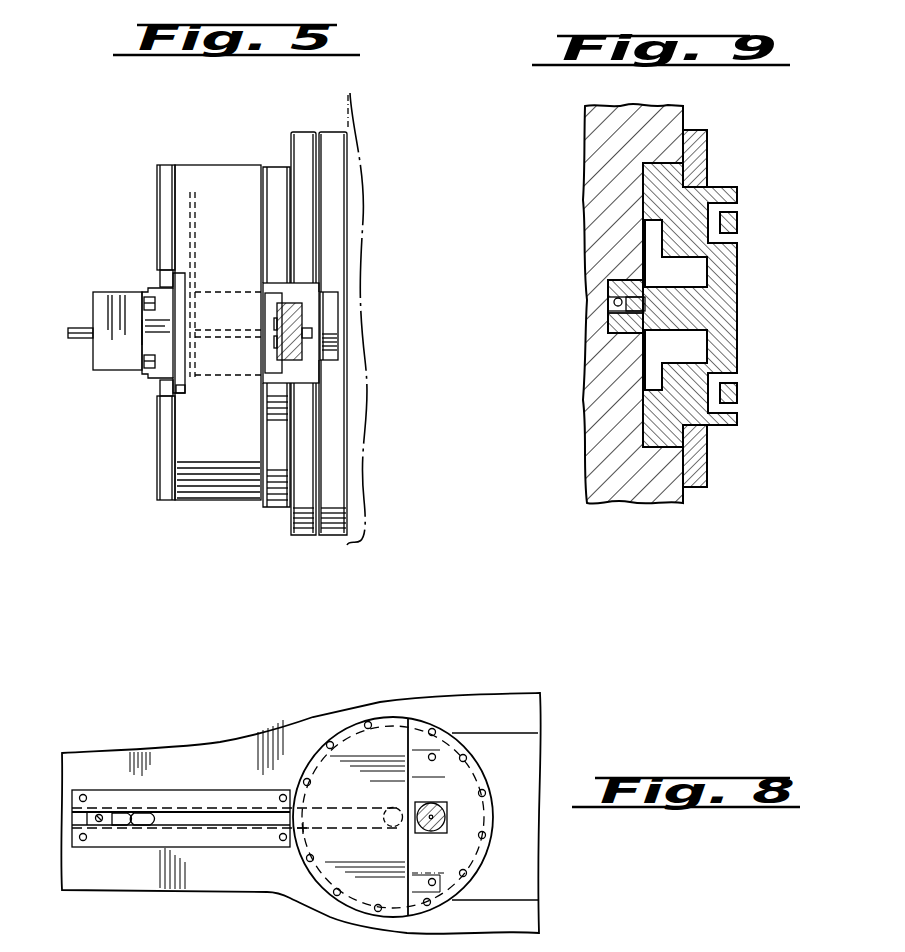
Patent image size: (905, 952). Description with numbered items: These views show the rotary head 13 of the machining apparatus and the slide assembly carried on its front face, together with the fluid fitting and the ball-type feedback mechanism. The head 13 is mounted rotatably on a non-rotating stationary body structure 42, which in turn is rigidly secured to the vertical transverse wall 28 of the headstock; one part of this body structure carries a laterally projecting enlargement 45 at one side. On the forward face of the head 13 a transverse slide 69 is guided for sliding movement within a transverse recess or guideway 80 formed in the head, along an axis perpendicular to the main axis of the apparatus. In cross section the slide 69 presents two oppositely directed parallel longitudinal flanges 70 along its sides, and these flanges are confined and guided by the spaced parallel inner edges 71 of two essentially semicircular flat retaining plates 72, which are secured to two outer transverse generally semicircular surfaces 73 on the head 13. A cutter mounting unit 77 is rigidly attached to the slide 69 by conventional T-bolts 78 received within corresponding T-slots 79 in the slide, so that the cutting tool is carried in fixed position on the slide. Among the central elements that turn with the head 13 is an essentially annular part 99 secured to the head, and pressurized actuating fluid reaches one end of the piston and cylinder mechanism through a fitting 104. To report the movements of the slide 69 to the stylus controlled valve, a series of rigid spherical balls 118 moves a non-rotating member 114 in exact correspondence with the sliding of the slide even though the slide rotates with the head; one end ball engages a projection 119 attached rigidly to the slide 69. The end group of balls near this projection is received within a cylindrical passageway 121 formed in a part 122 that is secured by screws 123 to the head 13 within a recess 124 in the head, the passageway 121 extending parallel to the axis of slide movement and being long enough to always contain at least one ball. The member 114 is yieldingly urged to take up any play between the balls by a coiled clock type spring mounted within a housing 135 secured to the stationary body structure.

In FIG. 5, the head 13 is at (232, 142).
In FIG. 5, the vertical transverse wall 28 is at (347, 545).
In FIG. 5, the non-rotating stationary body structure 42 is at (305, 128).
In FIG. 5, the laterally projecting enlargement 45 is at (305, 262).
In FIG. 5, the transverse slide 69 is at (140, 342).
In FIG. 9, the transverse slide 69 is at (767, 322).
In FIG. 5, the longitudinal flanges 70 is at (162, 278).
In FIG. 5, the inner edges 71 is at (148, 297).
In FIG. 5, the retaining plates 72 is at (158, 200).
In FIG. 5, the outer transverse semicircular surfaces 73 is at (168, 500).
In FIG. 5, the cutter mounting unit 77 is at (93, 300).
In FIG. 5, the T-bolts 78 is at (142, 288).
In FIG. 5, the T-slots 79 is at (148, 343).
In FIG. 5, the transverse recess or guideway 80 is at (178, 392).
In FIG. 8, the annular part 99 is at (432, 722).
In FIG. 8, the fitting 104 is at (447, 825).
In FIG. 5, the member 114 is at (312, 333).
In FIG. 8, the spherical balls 118 is at (148, 826).
In FIG. 8, the projection 119 is at (108, 823).
In FIG. 9, the cylindrical passageway 121 is at (614, 302).
In FIG. 9, the part 122 is at (616, 336).
In FIG. 8, the part 122 is at (233, 850).
In FIG. 9, the screws 123 is at (598, 285).
In FIG. 9, the recess 124 is at (608, 331).
In FIG. 5, the housing 135 is at (338, 307).